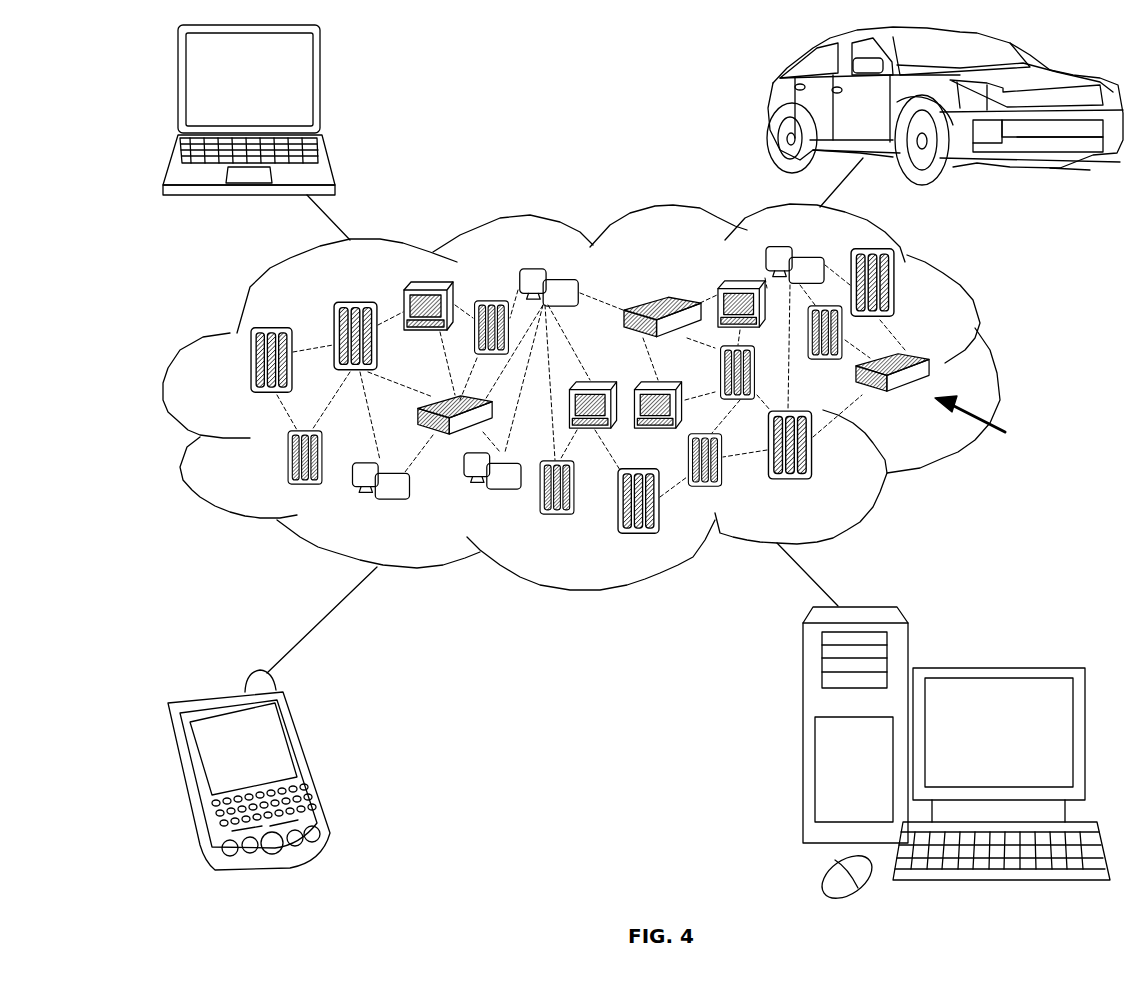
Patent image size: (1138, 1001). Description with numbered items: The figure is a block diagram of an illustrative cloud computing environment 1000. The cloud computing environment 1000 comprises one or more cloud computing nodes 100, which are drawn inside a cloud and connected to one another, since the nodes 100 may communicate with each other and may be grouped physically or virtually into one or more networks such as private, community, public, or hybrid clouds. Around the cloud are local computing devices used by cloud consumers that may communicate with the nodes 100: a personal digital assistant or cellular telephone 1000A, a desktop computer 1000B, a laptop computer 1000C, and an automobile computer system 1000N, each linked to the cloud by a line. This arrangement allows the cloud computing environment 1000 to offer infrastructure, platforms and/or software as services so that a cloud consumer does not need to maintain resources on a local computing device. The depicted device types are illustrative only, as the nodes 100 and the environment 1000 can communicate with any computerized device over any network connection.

The cloud computing environment 1000 is at (1000, 373).
The cloud computing nodes 100 is at (992, 421).
The personal digital assistant (PDA) or cellular telephone 1000A is at (310, 766).
The desktop computer 1000B is at (993, 667).
The laptop computer 1000C is at (323, 92).
The automobile computer system 1000N is at (770, 103).